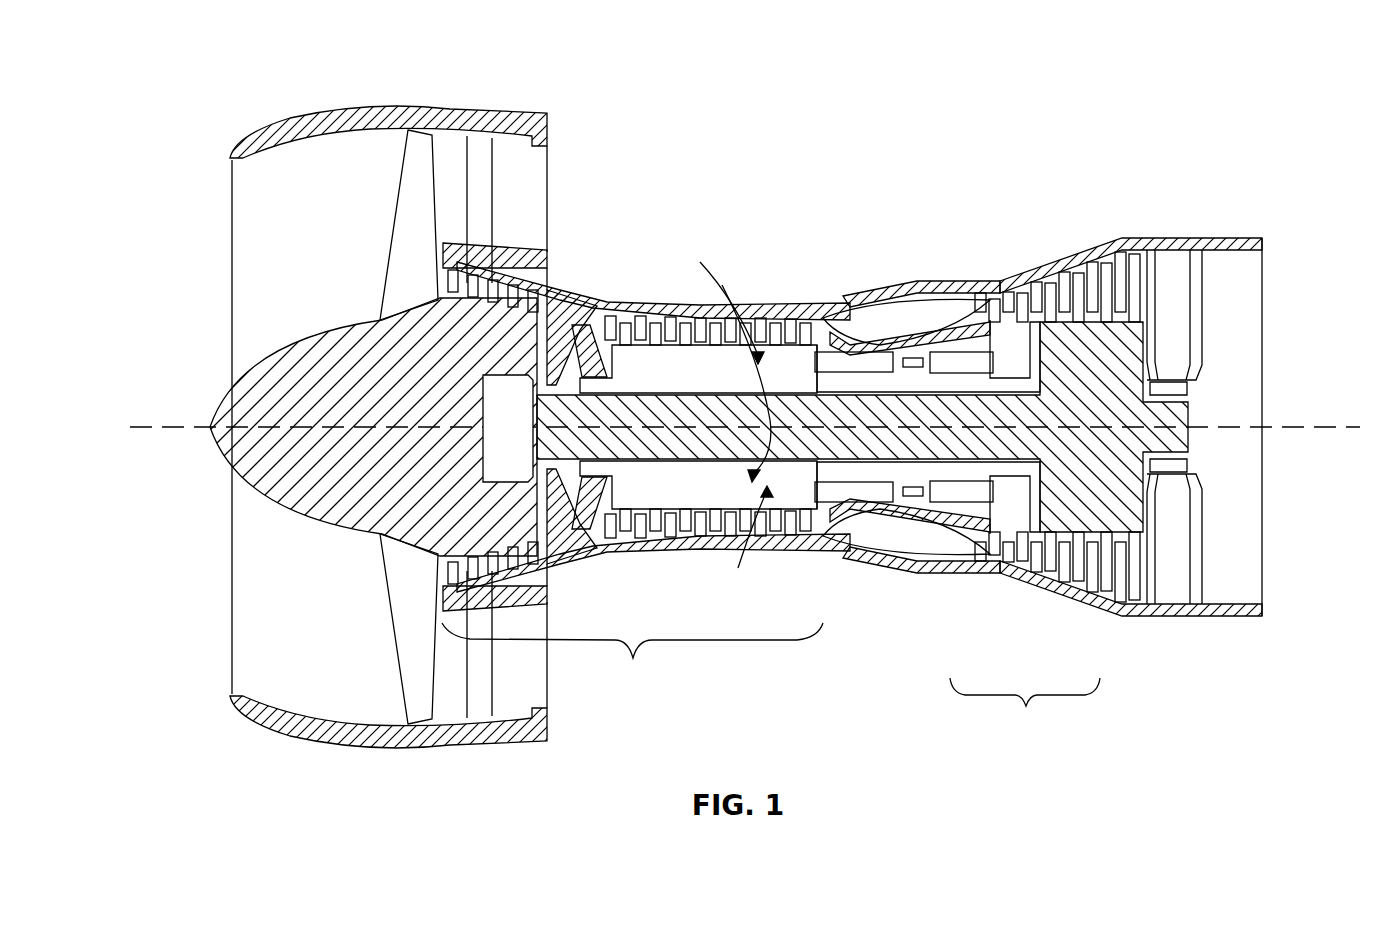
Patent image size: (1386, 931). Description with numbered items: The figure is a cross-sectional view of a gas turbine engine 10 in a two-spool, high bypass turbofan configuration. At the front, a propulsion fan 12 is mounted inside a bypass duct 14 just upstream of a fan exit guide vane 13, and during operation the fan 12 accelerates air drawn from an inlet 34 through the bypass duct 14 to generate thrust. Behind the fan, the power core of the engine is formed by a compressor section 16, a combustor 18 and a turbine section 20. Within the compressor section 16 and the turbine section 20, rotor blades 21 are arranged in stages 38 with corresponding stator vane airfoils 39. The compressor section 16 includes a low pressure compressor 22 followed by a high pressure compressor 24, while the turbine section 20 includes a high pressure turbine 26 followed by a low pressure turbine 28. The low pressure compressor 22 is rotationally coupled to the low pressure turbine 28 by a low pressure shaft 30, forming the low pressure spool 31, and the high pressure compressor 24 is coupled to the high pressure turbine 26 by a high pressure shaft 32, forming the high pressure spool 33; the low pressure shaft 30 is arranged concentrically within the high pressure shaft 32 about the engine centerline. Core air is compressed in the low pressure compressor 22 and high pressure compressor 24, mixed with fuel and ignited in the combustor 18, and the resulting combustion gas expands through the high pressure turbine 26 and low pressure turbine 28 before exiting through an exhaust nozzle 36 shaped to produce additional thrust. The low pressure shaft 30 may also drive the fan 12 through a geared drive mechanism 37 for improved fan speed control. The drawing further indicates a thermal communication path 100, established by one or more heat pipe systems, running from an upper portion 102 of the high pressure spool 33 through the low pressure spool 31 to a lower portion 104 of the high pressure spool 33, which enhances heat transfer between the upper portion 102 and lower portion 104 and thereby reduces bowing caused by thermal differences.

The gas turbine engine 10 is at (232, 100).
The propulsion fan 12 is at (402, 233).
The fan exit guide vane 13 is at (487, 148).
The bypass duct 14 is at (547, 196).
The compressor section 16 is at (632, 656).
The combustor 18 is at (907, 320).
The turbine section 20 is at (1025, 707).
The rotor blades 21 is at (812, 328).
The low pressure compressor 22 is at (536, 586).
The high pressure compressor 24 is at (667, 560).
The high pressure turbine 26 is at (1008, 582).
The low pressure turbine 28 is at (1098, 606).
The low pressure shaft 30 is at (915, 447).
The low pressure spool 31 is at (1135, 367).
The high pressure shaft 32 is at (843, 470).
The high pressure spool 33 is at (668, 360).
The inlet 34 is at (243, 240).
The exhaust nozzle 36 is at (1250, 357).
The geared drive mechanism 37 is at (490, 450).
The stages 38 is at (437, 568).
The stator vane airfoils 39 is at (795, 330).
The thermal communication path 100 is at (715, 297).
The upper portion 102 is at (734, 369).
The lower portion 104 is at (698, 530).